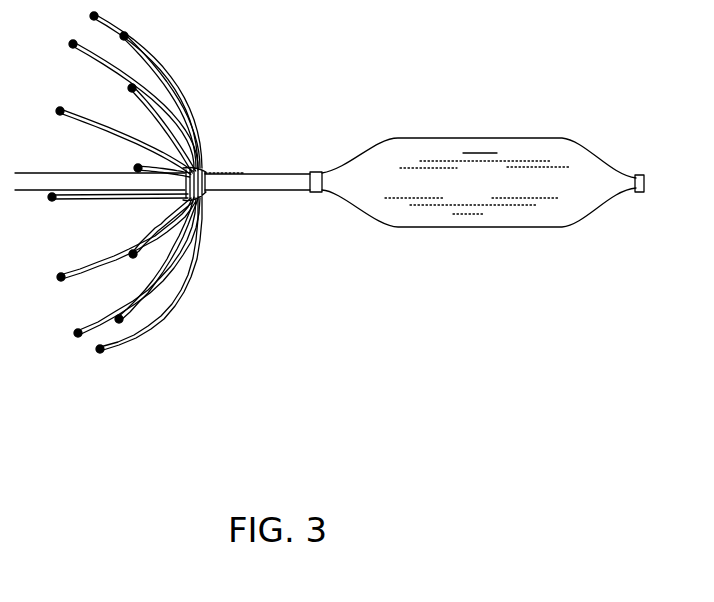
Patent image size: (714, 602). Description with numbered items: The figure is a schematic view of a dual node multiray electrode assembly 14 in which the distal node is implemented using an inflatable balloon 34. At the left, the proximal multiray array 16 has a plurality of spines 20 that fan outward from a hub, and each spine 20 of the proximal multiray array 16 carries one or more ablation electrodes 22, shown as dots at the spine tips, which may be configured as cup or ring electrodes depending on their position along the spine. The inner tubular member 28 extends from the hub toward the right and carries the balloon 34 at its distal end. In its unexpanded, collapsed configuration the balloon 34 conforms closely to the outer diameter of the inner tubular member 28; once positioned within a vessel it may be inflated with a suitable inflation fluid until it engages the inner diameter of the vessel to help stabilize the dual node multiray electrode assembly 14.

The dual node multiray electrode assembly 14 is at (233, 346).
The proximal multiray array 16 is at (74, 350).
The spine 20 is at (97, 127).
The ablation electrode 22 is at (59, 274).
The inner tubular member 28 is at (255, 173).
The inflatable balloon 34 is at (500, 138).